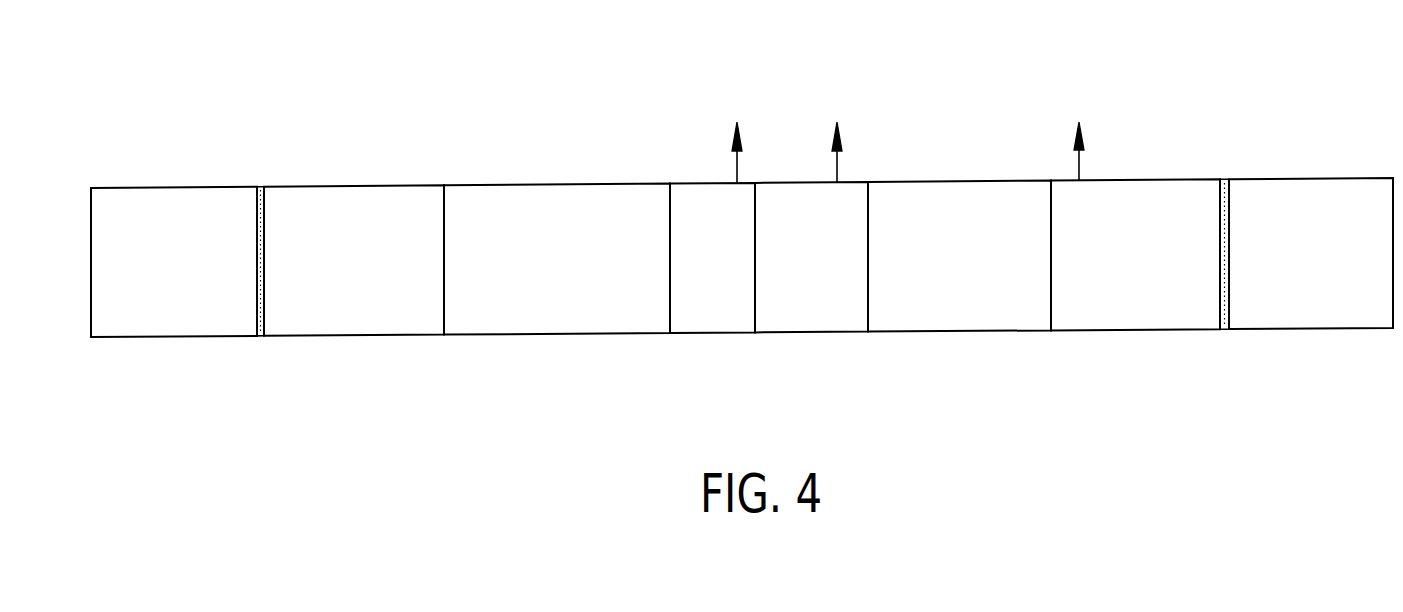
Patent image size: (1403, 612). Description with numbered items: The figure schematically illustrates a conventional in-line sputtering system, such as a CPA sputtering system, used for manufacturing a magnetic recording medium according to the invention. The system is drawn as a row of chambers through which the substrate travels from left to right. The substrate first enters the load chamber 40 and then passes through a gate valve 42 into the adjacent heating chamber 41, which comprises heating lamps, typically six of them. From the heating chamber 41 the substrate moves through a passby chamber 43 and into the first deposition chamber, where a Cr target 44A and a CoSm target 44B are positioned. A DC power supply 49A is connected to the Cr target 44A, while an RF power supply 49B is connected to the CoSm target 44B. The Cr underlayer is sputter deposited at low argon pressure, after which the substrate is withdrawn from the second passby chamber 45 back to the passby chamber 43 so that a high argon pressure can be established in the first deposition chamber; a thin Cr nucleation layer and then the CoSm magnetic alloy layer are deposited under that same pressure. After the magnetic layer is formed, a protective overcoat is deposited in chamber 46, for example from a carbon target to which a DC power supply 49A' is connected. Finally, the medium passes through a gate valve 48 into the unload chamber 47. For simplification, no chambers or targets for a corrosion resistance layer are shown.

The load chamber 40 is at (133, 187).
The gate valve 42 is at (260, 188).
The heating chamber 41 is at (340, 185).
The passby chamber 43 is at (526, 186).
The Cr target 44A is at (680, 183).
The CoSm target 44B is at (853, 183).
The second passby chamber 45 is at (993, 180).
The chamber 46 is at (1120, 178).
The gate valve 48 is at (1223, 178).
The unload chamber 47 is at (1328, 177).
The DC power supply 49A is at (733, 116).
The RF power supply 49B is at (837, 121).
The DC power supply 49A' is at (1066, 117).